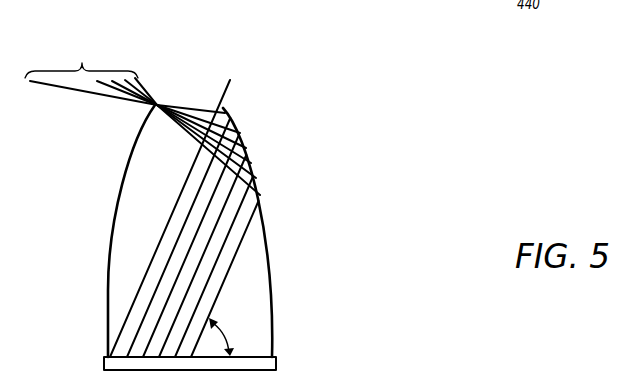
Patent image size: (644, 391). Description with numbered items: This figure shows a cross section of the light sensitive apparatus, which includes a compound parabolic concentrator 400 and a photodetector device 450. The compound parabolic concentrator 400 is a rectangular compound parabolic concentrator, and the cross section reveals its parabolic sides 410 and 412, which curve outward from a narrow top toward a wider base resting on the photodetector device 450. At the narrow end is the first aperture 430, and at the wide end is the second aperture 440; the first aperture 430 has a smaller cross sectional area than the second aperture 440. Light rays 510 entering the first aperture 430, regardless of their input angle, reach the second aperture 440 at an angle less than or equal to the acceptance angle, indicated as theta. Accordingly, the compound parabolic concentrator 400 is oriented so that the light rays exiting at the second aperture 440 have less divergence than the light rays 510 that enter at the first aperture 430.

The compound parabolic concentrator 400 is at (223, 193).
The parabolic surface 410 is at (109, 263).
The parabolic surface 412 is at (267, 242).
The first aperture 430 is at (195, 102).
The second aperture 440 is at (252, 357).
The photodetector device 450 is at (277, 364).
The light rays 510 is at (82, 63).